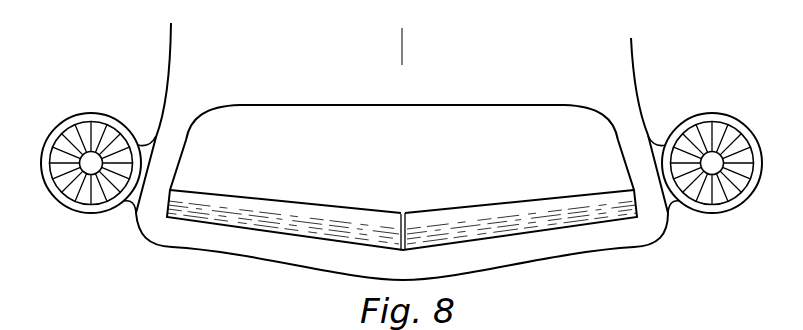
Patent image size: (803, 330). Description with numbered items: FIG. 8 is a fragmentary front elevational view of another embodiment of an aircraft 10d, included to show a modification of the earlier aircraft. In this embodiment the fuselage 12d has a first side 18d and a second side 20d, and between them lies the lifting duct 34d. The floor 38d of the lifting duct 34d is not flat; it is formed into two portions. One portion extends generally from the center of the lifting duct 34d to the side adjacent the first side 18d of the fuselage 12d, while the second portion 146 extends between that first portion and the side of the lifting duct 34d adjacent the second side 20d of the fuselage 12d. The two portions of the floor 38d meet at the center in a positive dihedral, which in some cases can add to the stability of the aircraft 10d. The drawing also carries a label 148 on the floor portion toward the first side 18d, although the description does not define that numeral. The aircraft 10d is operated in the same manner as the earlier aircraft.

The aircraft 10d is at (165, 40).
The fuselage 12d is at (623, 68).
The first side of the fuselage 18d is at (643, 97).
The second side of the fuselage 20d is at (166, 79).
The lifting duct 34d is at (343, 140).
The floor of the lifting duct 38d is at (432, 223).
The second portion 146 is at (543, 197).
The left bumper section 148 is at (276, 200).